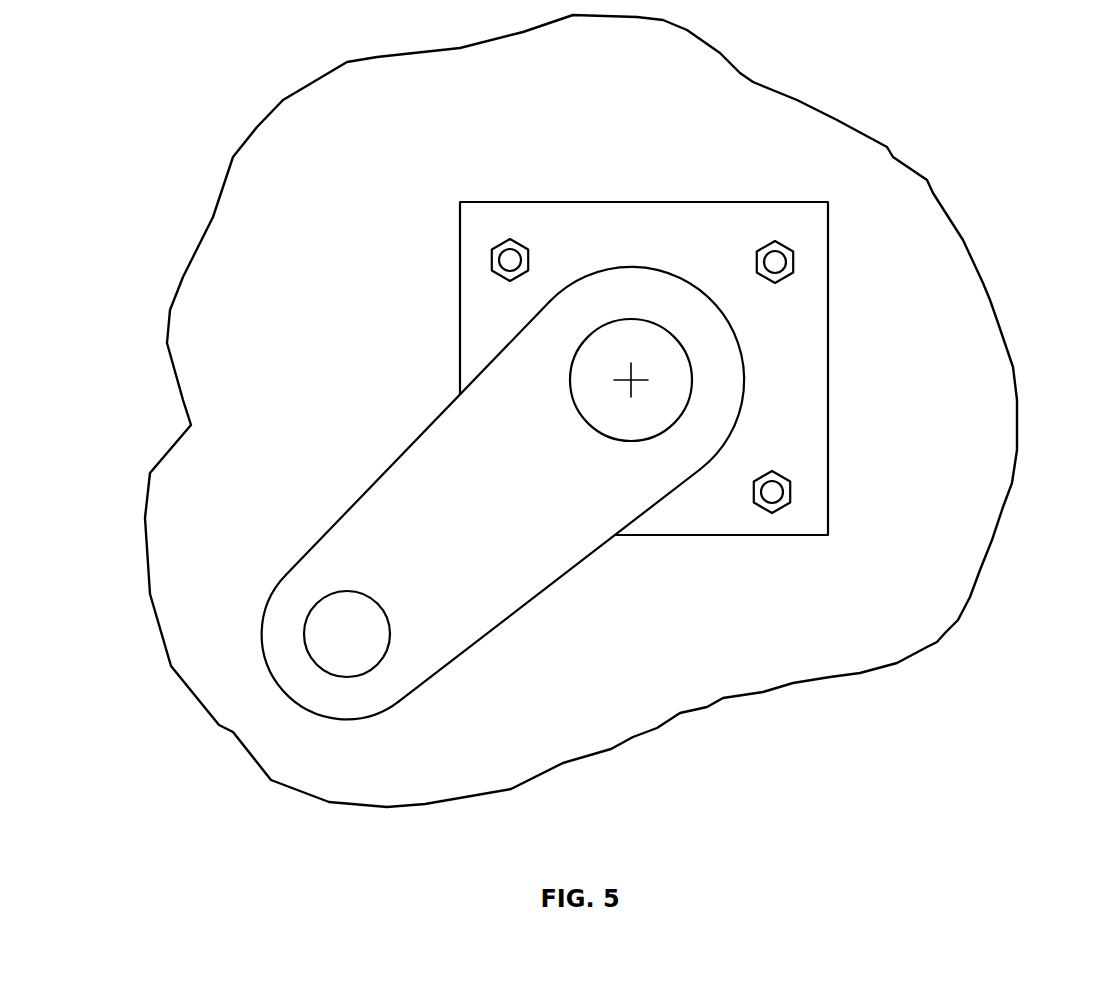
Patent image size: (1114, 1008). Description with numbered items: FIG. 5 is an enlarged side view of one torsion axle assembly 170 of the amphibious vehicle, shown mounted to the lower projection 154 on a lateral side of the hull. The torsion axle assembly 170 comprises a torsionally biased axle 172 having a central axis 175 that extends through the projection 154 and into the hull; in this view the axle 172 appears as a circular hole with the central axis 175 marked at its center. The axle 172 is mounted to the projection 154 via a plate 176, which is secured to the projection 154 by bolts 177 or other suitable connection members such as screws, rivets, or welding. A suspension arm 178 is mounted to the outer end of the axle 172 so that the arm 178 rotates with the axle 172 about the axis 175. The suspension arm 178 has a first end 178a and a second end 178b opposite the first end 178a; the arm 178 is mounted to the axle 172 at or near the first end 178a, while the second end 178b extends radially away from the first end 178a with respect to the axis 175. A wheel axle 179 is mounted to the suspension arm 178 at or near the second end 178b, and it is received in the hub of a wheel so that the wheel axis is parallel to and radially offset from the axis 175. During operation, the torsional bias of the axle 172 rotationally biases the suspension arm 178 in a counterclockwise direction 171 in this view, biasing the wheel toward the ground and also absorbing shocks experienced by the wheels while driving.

The lower projection 154 is at (973, 337).
The torsion axle assembly 170 is at (392, 243).
The counterclockwise direction 171 is at (292, 540).
The torsionally biased axle 172 is at (628, 320).
The central axis 175 is at (628, 375).
The plate 176 is at (652, 200).
The bolts 177 is at (790, 248).
The suspension arm 178 is at (538, 520).
The first end 178a is at (740, 333).
The second end 178b is at (270, 694).
The wheel axle 179 is at (389, 640).